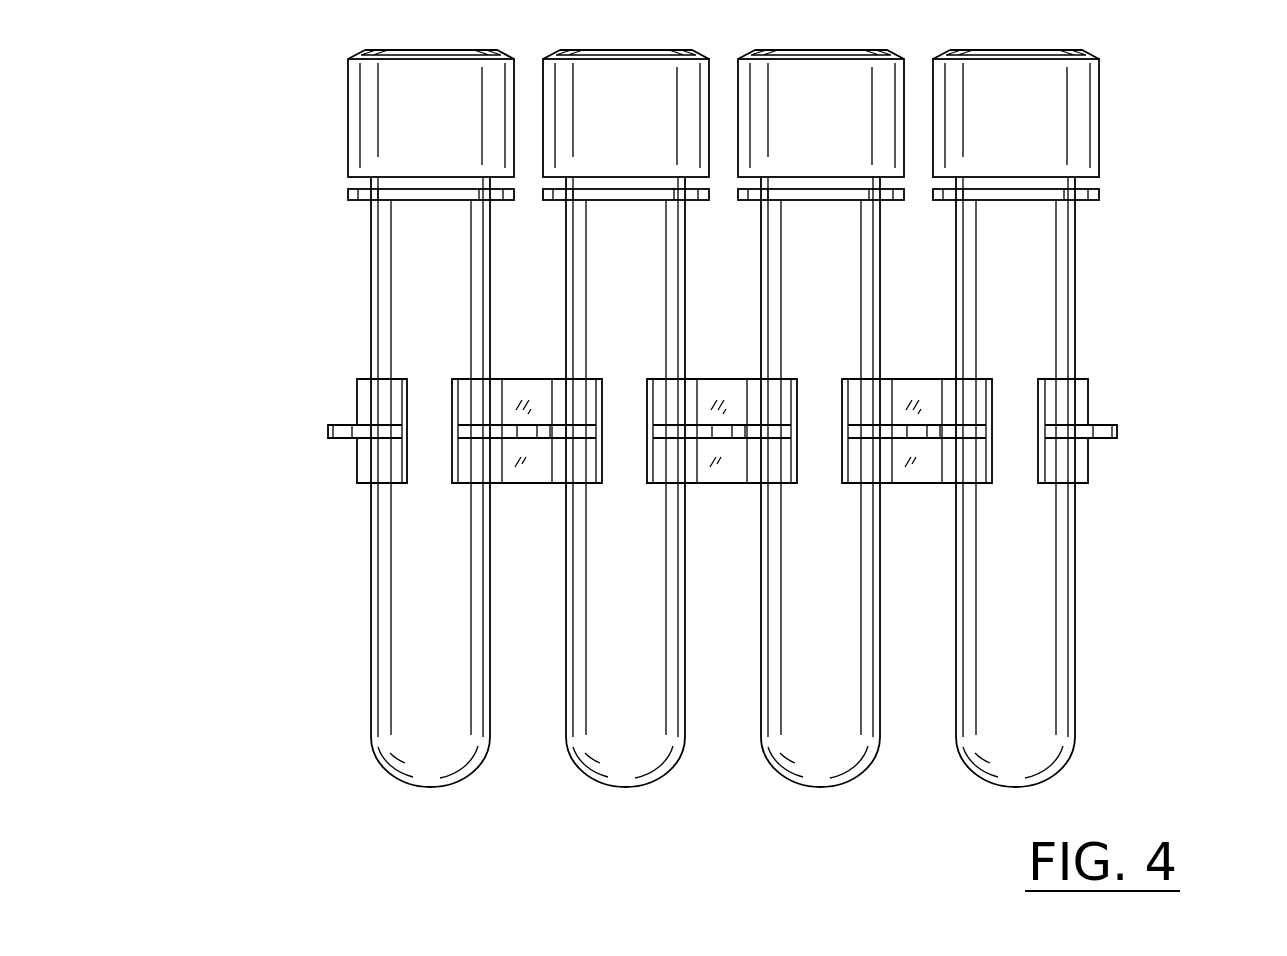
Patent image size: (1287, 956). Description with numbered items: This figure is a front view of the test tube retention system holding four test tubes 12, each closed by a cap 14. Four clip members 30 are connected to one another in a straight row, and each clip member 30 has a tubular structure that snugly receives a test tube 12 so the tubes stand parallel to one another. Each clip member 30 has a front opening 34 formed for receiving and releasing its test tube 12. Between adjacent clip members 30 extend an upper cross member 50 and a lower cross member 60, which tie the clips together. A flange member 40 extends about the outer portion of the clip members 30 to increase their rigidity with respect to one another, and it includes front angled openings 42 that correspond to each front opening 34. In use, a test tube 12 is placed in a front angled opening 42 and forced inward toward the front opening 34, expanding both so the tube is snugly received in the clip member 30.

The test tube 12 is at (432, 699).
The cap 14 is at (408, 113).
The clip member 30 is at (368, 396).
The front opening 34 is at (1042, 460).
The flange member 40 is at (342, 435).
The front angled opening 42 is at (397, 445).
The upper cross member 50 is at (527, 390).
The lower cross member 60 is at (530, 470).